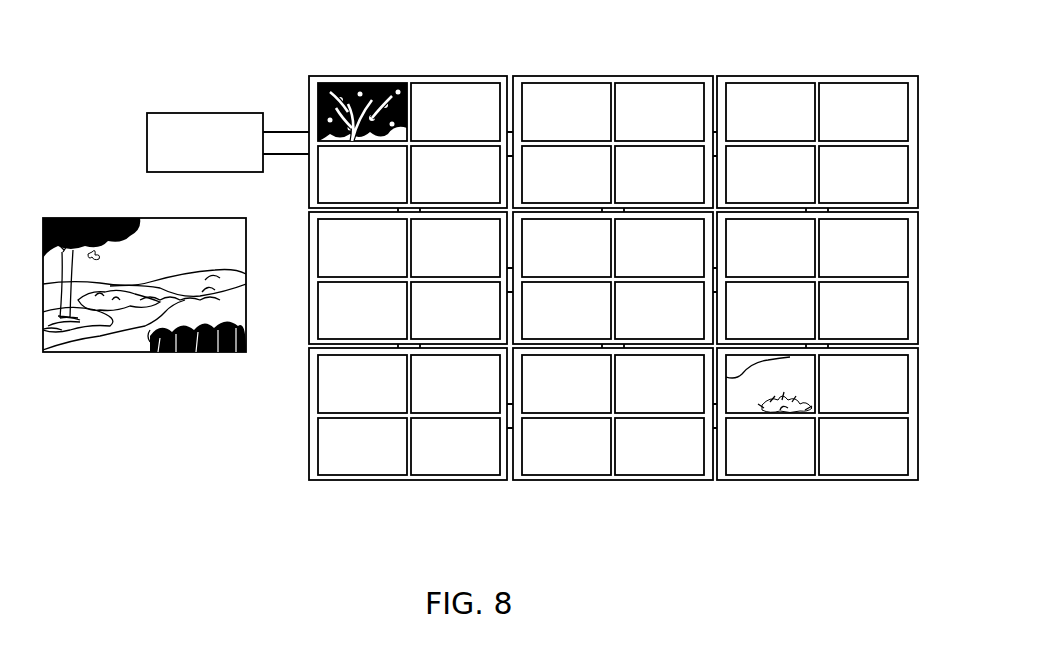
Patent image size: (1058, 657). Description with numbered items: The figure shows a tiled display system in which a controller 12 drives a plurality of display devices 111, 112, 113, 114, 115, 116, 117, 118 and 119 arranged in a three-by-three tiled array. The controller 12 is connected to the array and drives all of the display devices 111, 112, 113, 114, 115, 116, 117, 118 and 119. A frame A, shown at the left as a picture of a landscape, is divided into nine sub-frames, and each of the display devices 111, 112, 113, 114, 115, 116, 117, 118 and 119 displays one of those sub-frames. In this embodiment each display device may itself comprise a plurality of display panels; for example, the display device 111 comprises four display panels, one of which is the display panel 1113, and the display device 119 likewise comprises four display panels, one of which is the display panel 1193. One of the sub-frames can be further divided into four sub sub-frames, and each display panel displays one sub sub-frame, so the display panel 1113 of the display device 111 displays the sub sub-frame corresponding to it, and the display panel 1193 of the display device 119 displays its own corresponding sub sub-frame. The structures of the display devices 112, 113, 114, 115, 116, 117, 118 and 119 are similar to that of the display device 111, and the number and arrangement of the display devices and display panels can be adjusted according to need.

The controller 12 is at (205, 120).
The display device 111 is at (408, 115).
The display device 112 is at (608, 80).
The display device 113 is at (812, 80).
The display device 114 is at (918, 276).
The display device 115 is at (576, 338).
The display device 116 is at (309, 300).
The display device 117 is at (309, 437).
The display device 118 is at (656, 481).
The display device 119 is at (817, 434).
The display panel 1113 is at (368, 82).
The display panel 1193 is at (753, 407).
The frame A is at (143, 352).